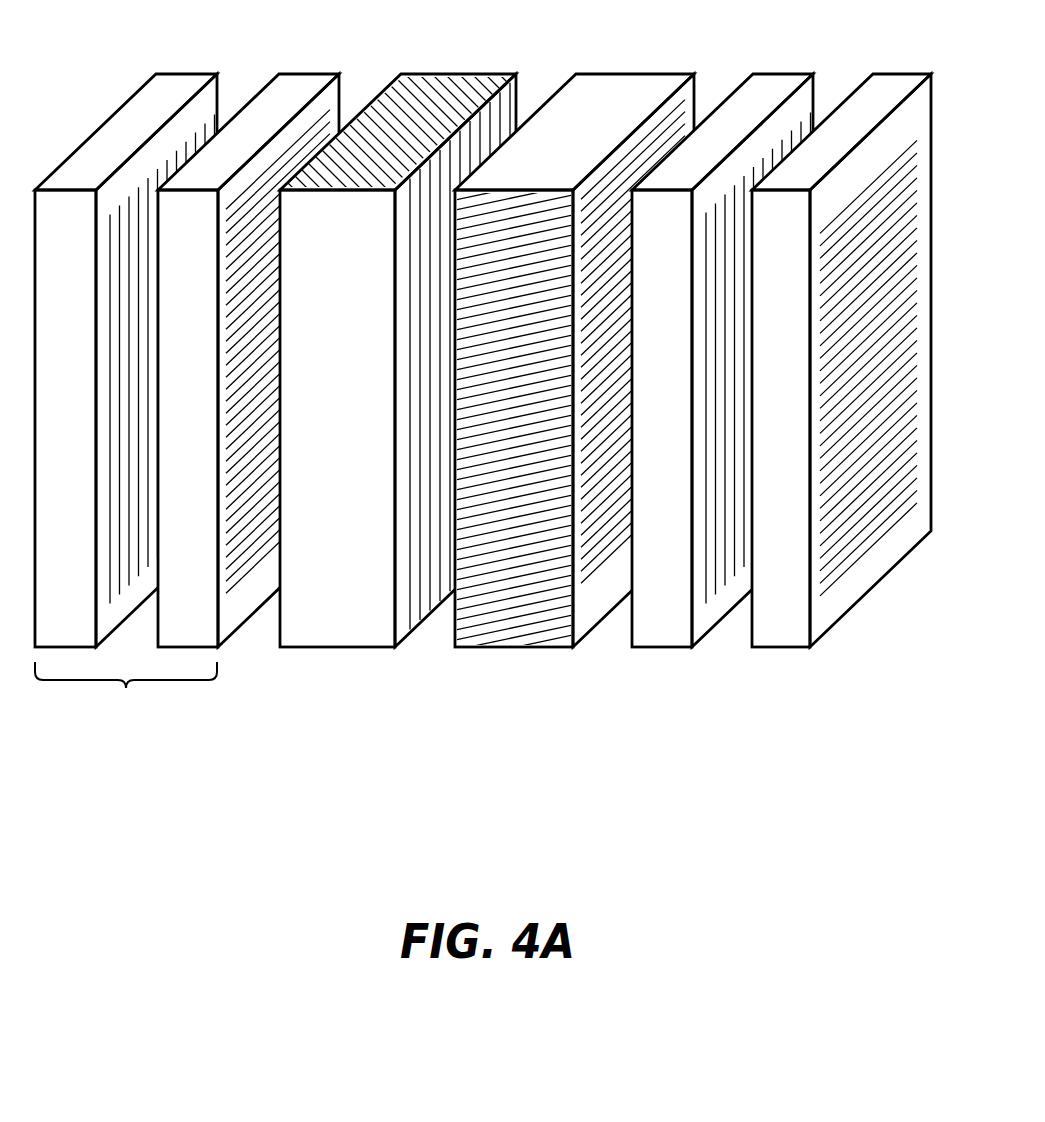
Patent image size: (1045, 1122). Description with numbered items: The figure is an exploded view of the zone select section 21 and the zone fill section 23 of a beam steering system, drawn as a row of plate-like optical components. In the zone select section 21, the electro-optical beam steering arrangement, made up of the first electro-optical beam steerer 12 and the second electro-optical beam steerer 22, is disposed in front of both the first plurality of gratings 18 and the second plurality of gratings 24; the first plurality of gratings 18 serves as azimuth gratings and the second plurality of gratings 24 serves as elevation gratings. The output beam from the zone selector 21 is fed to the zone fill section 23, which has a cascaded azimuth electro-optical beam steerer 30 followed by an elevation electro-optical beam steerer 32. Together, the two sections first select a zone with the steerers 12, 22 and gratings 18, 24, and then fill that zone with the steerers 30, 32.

The first electro-optical beam steerer 12 is at (183, 87).
The second electro-optical beam steerer 22 is at (302, 87).
The first plurality of gratings 18 is at (447, 87).
The second plurality of gratings 24 is at (622, 87).
The azimuth electro-optical beam steerer 30 is at (772, 87).
The elevation electro-optical beam steerer 32 is at (891, 87).
The zone select section 21 is at (364, 420).
The zone fill section 23 is at (781, 376).